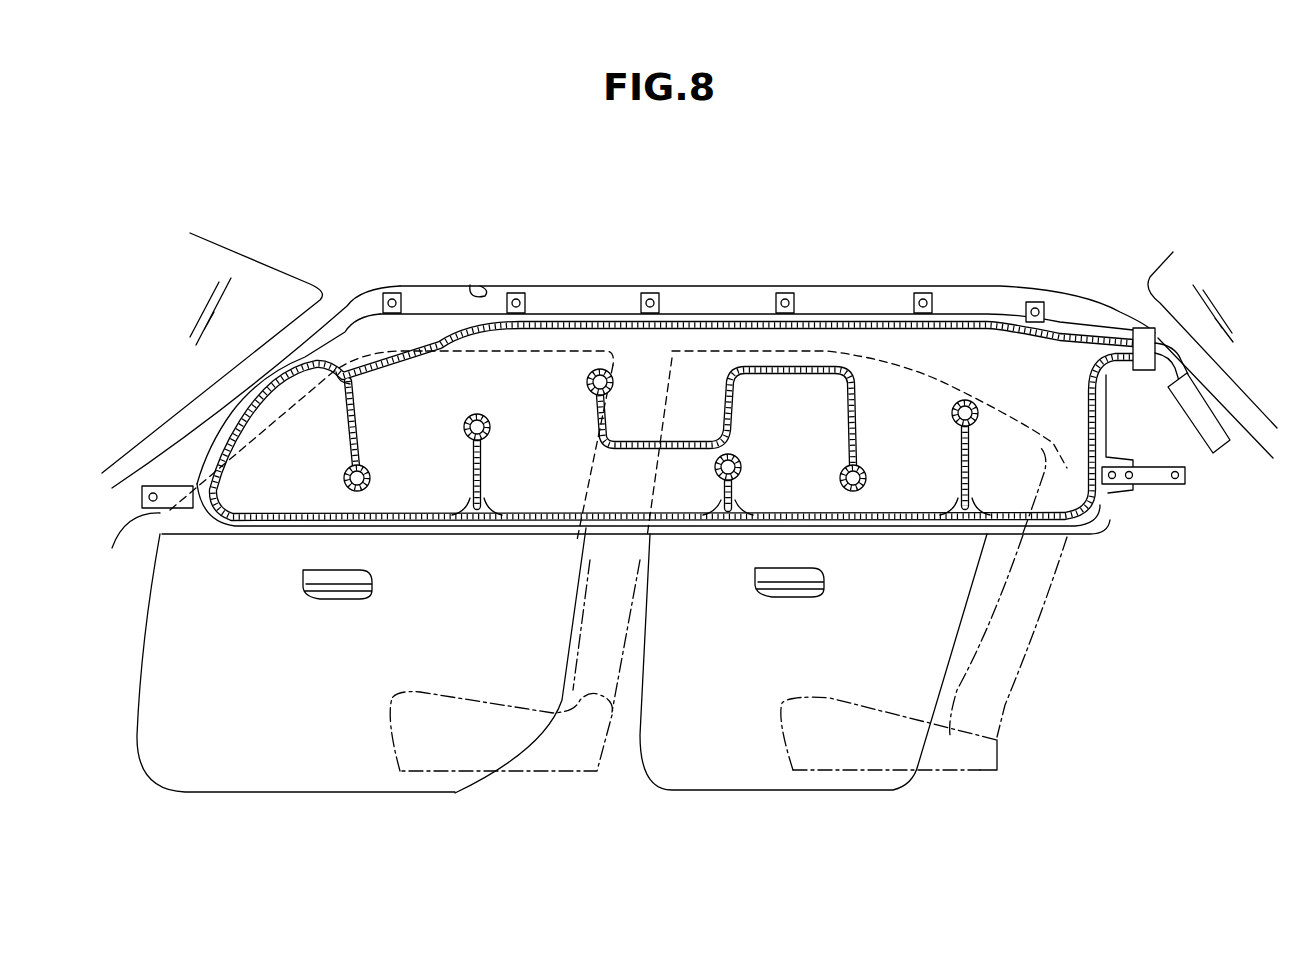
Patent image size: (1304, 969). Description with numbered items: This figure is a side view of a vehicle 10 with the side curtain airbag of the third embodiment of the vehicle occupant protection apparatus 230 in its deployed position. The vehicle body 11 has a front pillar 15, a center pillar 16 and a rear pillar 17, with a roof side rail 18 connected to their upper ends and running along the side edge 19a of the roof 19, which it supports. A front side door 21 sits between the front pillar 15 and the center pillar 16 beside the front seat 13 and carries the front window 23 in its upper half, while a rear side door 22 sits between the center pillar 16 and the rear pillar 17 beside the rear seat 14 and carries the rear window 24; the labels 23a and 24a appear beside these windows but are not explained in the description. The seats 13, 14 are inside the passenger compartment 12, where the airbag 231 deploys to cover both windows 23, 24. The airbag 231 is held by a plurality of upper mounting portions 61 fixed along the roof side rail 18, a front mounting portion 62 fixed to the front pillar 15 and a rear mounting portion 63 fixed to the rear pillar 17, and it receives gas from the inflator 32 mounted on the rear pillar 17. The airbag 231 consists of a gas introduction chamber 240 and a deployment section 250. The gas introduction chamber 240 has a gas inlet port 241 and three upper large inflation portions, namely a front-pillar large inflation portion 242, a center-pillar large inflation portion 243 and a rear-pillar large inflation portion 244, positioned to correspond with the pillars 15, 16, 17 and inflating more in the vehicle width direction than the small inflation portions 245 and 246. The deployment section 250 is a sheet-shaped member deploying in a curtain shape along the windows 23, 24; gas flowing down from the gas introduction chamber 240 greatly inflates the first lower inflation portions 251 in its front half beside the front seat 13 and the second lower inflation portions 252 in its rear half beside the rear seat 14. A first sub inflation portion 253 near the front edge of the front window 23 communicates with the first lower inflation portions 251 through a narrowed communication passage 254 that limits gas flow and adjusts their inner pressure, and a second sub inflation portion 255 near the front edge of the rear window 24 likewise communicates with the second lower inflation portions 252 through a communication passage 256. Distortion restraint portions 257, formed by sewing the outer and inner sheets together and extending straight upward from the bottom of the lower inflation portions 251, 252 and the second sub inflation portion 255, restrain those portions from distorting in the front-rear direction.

The vehicle 10 is at (140, 188).
The vehicle body 11 is at (105, 458).
The passenger compartment 12 is at (236, 852).
The front seat 13 is at (517, 776).
The rear seat 14 is at (952, 775).
The front pillar 15 is at (162, 438).
The center pillar 16 is at (568, 627).
The rear pillar 17 is at (1235, 480).
The roof side rail 18 is at (415, 296).
The roof 19 is at (447, 202).
The side edge of the roof 19a is at (470, 285).
The front side door 21 is at (330, 770).
The rear side door 22 is at (722, 770).
The front window 23 is at (320, 378).
The door portion of airbag cover 23a is at (285, 342).
The rear window 24 is at (673, 327).
The folded airbag 24a is at (742, 355).
The inflator 32 is at (1200, 403).
The upper mounting portions 61 is at (922, 296).
The front mounting portion 62 is at (142, 507).
The rear mounting portion 63 is at (1160, 484).
The vehicle occupant protection apparatus 230 is at (1180, 325).
The airbag 231 is at (1145, 192).
The gas introduction chamber 240 is at (1105, 333).
The gas inlet port 241 is at (1160, 335).
The front-pillar large inflation portion 242 is at (494, 368).
The center-pillar large inflation portion 243 is at (648, 380).
The rear-pillar large inflation portion 244 is at (1003, 395).
The small inflation portion 245 is at (600, 360).
The small inflation portion 246 is at (811, 342).
The deployment section 250 is at (1088, 393).
The first lower inflation portions 251 is at (420, 480).
The second lower inflation portions 252 is at (917, 470).
The first sub inflation portion 253 is at (262, 478).
The communication passage 254 is at (352, 497).
The second sub inflation portion 255 is at (789, 450).
The communication passage 256 is at (860, 505).
The distortion restraint portions 257 is at (474, 444).